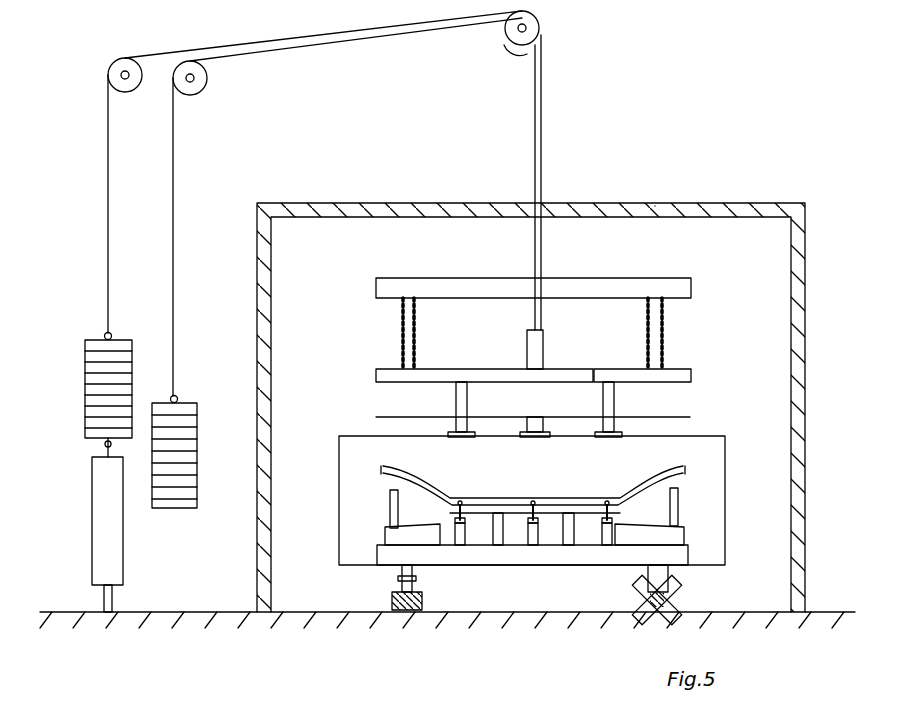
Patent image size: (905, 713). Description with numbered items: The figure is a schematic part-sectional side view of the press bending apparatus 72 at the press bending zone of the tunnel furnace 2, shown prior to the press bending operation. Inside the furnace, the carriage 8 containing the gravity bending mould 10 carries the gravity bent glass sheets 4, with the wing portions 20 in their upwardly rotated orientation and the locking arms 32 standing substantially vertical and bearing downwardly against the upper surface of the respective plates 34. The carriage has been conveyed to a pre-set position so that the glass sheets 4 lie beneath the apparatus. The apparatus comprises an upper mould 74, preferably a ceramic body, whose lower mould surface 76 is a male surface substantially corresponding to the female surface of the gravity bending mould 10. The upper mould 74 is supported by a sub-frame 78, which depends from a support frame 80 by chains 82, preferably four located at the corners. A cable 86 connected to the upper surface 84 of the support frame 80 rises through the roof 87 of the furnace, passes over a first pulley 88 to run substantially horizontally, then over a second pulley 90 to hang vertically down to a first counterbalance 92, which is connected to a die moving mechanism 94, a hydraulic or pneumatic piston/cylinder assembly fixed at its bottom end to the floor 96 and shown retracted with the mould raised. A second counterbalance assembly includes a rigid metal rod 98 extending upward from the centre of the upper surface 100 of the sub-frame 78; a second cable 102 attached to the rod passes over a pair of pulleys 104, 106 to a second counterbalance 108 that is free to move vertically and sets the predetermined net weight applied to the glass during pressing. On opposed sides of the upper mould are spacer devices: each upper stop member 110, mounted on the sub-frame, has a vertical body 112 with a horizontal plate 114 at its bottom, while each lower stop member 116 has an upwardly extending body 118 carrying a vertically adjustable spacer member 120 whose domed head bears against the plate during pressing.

The tunnel furnace 2 is at (757, 203).
The glass sheets 4 is at (690, 480).
The carriage 8 is at (727, 505).
The gravity bending mould 10 is at (600, 548).
The wing portions 20 is at (385, 478).
The locking arms 32 is at (390, 500).
The plates 34 is at (390, 532).
The press bending apparatus 72 is at (583, 133).
The upper mould 74 is at (670, 398).
The lower mould surface 76 is at (400, 382).
The sub-frame 78 is at (660, 375).
The support frame 80 is at (692, 282).
The chains 82 is at (402, 325).
The upper surface 84 is at (608, 288).
The cable 86 is at (545, 95).
The roof 87 is at (656, 206).
The first pulley 88 is at (540, 25).
The second pulley 90 is at (108, 80).
The first counterbalance 92 is at (85, 345).
The die moving mechanism 94 is at (92, 478).
The floor 96 is at (60, 610).
The rigid metal rod 98 is at (527, 346).
The upper surface 100 is at (440, 378).
The second cable 102 is at (530, 126).
The pulley 104 is at (503, 47).
The pulley 106 is at (207, 84).
The second counterbalance 108 is at (197, 410).
The upper stop member 110 is at (472, 400).
The vertical body 112 is at (592, 372).
The horizontal plate 114 is at (450, 436).
The lower stop member 116 is at (475, 520).
The upwardly extending body 118 is at (462, 546).
The spacer member 120 is at (458, 502).